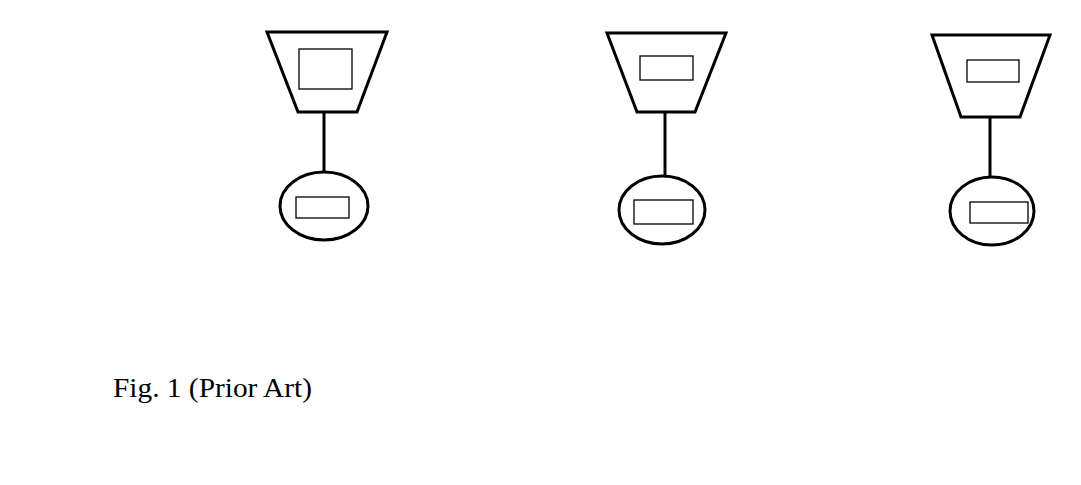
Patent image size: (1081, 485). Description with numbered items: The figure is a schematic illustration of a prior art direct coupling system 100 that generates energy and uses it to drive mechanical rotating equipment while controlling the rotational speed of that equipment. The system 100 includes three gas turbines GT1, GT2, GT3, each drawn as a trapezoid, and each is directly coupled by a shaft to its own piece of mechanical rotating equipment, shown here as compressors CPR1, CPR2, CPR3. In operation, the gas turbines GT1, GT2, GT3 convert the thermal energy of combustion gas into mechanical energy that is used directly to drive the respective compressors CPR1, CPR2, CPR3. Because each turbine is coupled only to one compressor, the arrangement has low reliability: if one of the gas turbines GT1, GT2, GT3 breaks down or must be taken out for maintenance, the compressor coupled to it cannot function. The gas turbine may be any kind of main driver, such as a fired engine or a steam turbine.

The system 100 is at (610, 138).
The gas turbine GT1 is at (327, 72).
The gas turbine GT2 is at (666, 72).
The gas turbine GT3 is at (991, 76).
The compressor CPR1 is at (324, 206).
The compressor CPR2 is at (662, 210).
The compressor CPR3 is at (992, 211).